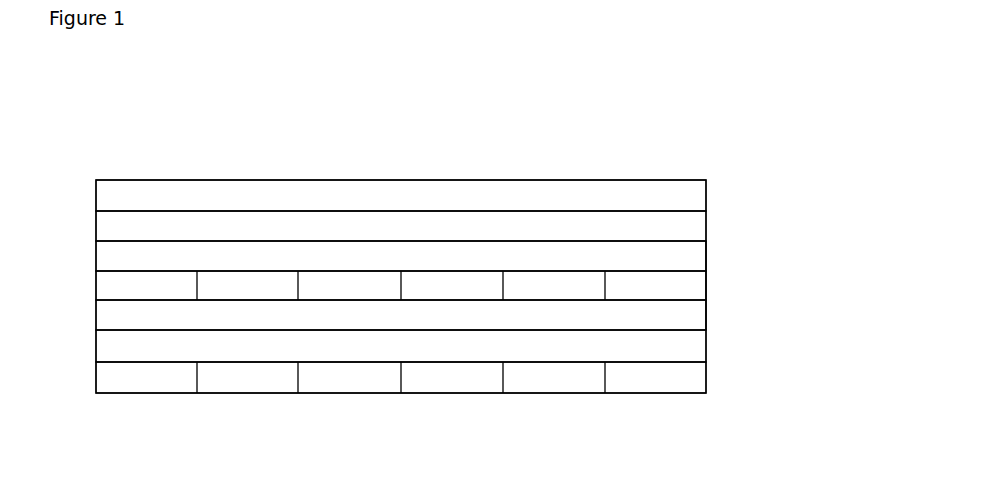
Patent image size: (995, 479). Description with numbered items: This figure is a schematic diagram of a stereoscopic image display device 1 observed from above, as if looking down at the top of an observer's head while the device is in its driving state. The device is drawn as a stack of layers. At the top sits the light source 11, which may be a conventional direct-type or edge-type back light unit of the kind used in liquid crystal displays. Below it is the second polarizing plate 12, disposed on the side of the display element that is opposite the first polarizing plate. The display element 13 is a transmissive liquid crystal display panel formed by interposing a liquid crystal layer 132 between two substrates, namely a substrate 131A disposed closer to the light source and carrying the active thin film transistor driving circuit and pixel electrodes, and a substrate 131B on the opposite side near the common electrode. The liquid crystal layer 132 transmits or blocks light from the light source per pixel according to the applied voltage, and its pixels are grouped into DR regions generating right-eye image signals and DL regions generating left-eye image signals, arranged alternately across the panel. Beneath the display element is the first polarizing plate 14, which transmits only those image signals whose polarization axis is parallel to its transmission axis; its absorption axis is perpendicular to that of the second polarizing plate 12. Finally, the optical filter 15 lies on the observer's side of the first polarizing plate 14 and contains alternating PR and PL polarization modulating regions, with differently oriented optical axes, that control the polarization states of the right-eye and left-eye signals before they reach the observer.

The stereoscopic image display device 1 is at (288, 170).
The light source 11 is at (697, 202).
The second polarizing plate 12 is at (104, 224).
The display element 13 is at (832, 213).
The substrate 131A is at (694, 265).
The liquid crystal layer 132 is at (696, 290).
The substrate 131B is at (690, 316).
The first polarizing plate 14 is at (108, 346).
The optical filter 15 is at (118, 394).